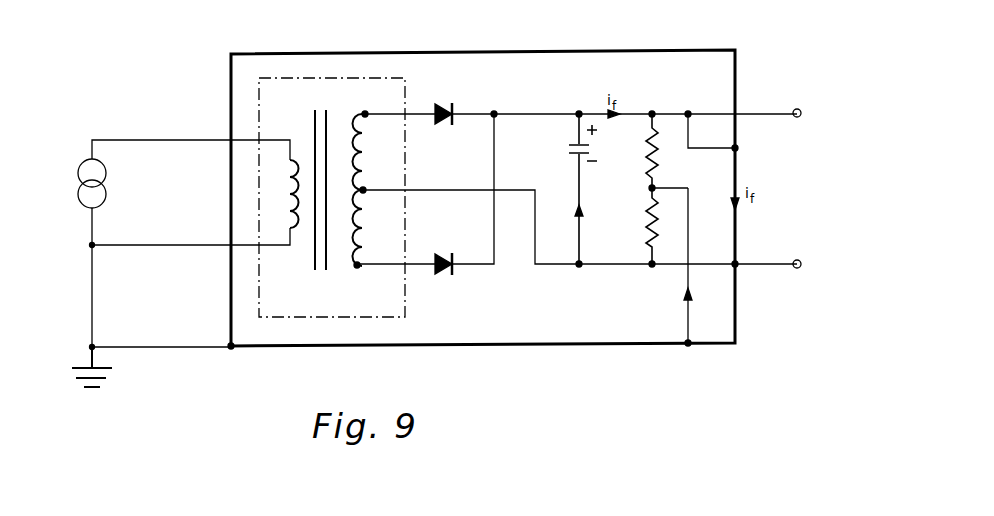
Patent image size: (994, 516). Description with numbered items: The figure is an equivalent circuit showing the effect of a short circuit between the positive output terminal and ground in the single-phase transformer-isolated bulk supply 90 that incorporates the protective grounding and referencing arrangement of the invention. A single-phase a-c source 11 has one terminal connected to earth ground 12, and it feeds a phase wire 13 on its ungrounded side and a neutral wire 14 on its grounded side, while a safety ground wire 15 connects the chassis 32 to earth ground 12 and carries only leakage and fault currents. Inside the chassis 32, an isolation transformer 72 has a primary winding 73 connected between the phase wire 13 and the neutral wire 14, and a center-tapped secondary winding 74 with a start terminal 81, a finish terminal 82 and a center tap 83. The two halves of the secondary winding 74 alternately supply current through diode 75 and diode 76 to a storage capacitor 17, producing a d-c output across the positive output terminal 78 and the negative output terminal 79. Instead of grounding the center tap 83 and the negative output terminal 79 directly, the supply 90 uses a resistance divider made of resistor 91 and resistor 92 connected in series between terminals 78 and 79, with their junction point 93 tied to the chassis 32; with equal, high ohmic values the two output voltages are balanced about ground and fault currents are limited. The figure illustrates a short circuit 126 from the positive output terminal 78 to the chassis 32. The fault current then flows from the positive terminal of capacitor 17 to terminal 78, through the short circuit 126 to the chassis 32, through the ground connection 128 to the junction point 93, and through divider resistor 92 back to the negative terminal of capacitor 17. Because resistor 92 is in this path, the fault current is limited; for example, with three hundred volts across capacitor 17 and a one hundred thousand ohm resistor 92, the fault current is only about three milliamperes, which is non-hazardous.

The single-phase a-c source 11 is at (79, 175).
The earth ground 12 is at (72, 368).
The phase wire 13 is at (176, 120).
The neutral wire 14 is at (180, 224).
The safety ground wire 15 is at (164, 346).
The storage capacitor 17 is at (571, 148).
The chassis 32 is at (656, 51).
The isolation transformer 72 is at (332, 197).
The primary winding 73 is at (291, 140).
The center-tapped secondary winding 74 is at (346, 120).
The diode 75 is at (455, 105).
The diode 76 is at (455, 274).
The positive output terminal 78 is at (801, 110).
The negative output terminal 79 is at (801, 260).
The start terminal 81 is at (360, 268).
The finish terminal 82 is at (366, 114).
The center tap 83 is at (363, 190).
The single-phase transformer-isolated bulk supply 90 is at (748, 37).
The resistor 91 is at (650, 151).
The resistor 92 is at (650, 229).
The junction point 93 is at (650, 188).
The short circuit 126 is at (688, 150).
The ground connection 128 is at (688, 316).